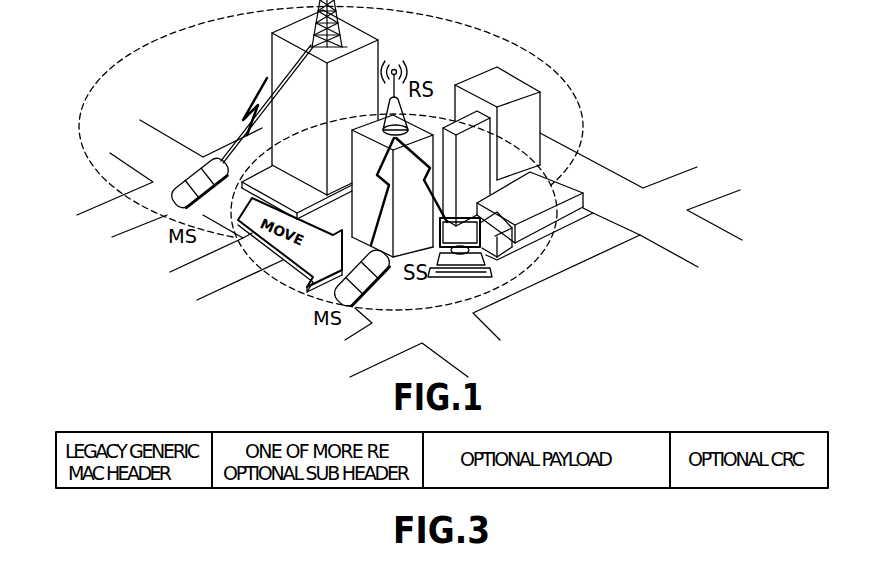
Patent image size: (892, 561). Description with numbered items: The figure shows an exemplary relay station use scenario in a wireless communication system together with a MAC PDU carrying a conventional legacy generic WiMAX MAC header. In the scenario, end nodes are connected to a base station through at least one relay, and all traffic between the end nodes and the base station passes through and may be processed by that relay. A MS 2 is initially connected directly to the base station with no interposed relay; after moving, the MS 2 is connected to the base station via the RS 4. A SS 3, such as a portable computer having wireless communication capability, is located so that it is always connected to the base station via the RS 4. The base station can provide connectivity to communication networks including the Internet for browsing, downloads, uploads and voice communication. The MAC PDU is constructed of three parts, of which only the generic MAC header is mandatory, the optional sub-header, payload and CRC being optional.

The MS 2 is at (197, 181).
The SS 3 is at (439, 230).
The RS 4 is at (386, 112).